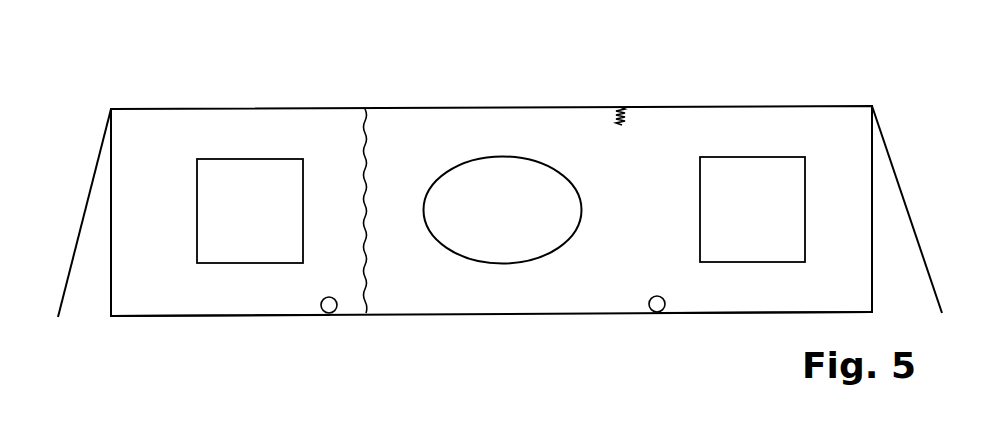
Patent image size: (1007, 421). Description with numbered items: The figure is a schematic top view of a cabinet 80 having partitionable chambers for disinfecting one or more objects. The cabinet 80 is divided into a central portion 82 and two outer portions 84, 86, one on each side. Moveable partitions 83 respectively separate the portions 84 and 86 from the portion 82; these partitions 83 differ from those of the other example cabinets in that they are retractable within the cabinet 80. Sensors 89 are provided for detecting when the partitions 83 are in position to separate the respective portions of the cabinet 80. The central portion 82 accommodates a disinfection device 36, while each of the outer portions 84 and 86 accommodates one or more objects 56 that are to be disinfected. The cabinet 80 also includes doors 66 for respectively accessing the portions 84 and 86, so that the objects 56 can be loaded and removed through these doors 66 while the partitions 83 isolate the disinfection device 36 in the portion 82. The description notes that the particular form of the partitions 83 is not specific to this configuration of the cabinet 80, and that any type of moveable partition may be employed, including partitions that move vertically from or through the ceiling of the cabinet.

The cabinet 80 is at (826, 57).
The portion 82 is at (473, 125).
The moveable partitions 83 is at (365, 177).
The portion 84 is at (216, 288).
The portion 86 is at (771, 295).
The sensors 89 is at (333, 312).
The doors 66 is at (85, 205).
The objects 56 is at (237, 222).
The disinfection device 36 is at (490, 222).